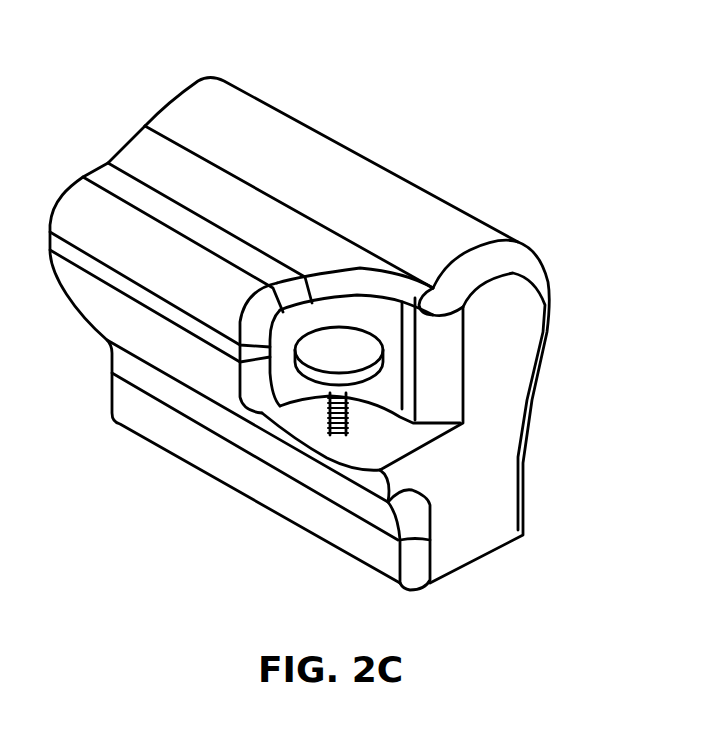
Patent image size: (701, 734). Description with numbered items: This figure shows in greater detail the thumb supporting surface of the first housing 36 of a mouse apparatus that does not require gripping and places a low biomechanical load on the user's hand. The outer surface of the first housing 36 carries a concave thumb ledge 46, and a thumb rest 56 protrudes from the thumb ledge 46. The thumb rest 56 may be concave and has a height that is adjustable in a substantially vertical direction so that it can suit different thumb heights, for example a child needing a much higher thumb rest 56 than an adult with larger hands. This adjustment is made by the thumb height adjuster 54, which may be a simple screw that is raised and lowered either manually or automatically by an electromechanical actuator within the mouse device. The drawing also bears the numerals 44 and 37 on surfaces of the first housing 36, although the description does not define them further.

The first housing 36 is at (412, 123).
The rounded top portion 44 is at (173, 108).
The end wall 37 is at (490, 491).
The thumb ledge 46 is at (352, 450).
The thumb height adjuster 54 is at (350, 421).
The thumb rest 56 is at (359, 367).